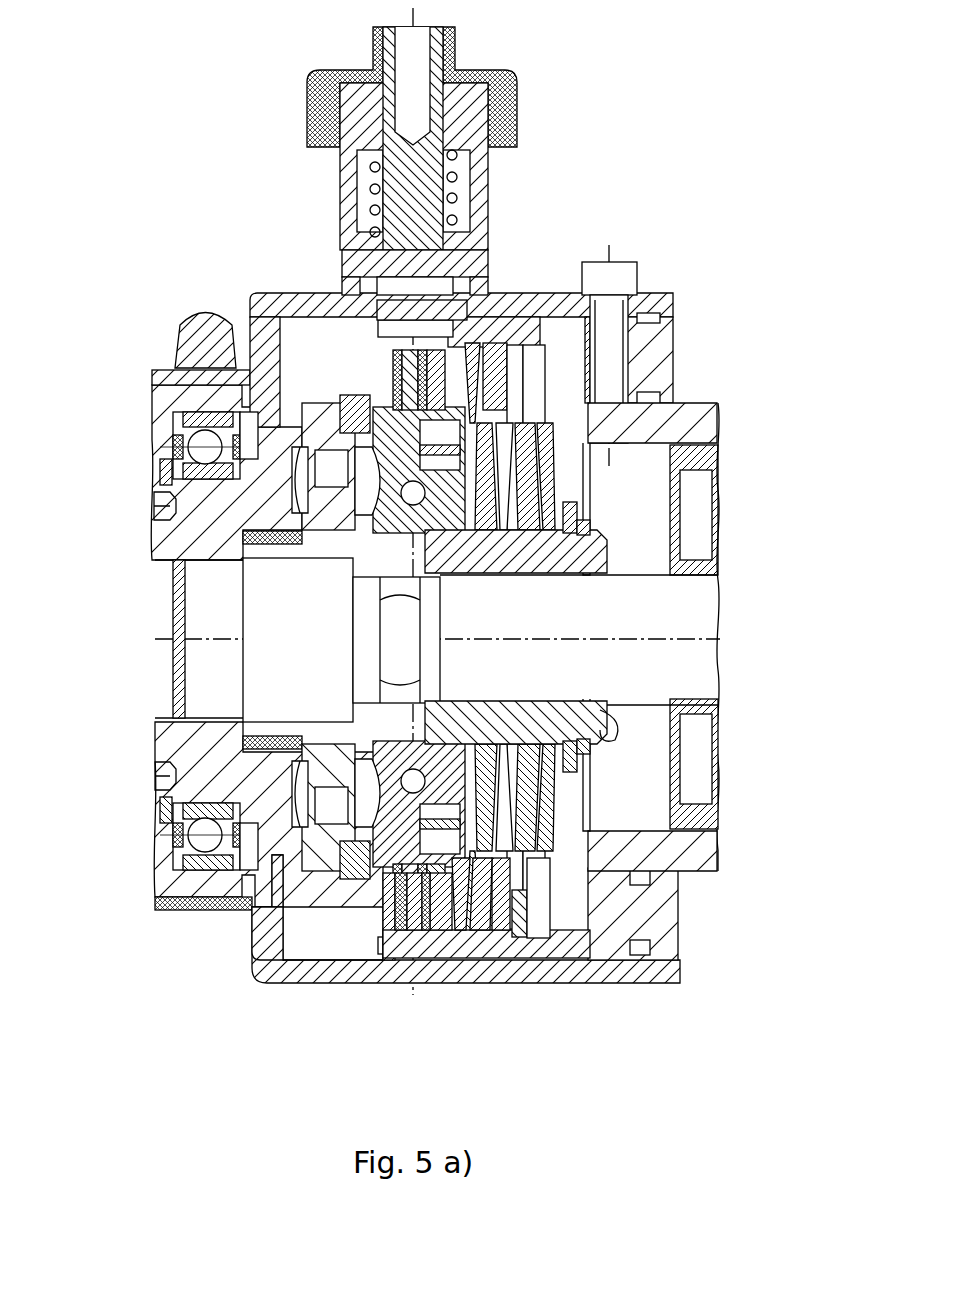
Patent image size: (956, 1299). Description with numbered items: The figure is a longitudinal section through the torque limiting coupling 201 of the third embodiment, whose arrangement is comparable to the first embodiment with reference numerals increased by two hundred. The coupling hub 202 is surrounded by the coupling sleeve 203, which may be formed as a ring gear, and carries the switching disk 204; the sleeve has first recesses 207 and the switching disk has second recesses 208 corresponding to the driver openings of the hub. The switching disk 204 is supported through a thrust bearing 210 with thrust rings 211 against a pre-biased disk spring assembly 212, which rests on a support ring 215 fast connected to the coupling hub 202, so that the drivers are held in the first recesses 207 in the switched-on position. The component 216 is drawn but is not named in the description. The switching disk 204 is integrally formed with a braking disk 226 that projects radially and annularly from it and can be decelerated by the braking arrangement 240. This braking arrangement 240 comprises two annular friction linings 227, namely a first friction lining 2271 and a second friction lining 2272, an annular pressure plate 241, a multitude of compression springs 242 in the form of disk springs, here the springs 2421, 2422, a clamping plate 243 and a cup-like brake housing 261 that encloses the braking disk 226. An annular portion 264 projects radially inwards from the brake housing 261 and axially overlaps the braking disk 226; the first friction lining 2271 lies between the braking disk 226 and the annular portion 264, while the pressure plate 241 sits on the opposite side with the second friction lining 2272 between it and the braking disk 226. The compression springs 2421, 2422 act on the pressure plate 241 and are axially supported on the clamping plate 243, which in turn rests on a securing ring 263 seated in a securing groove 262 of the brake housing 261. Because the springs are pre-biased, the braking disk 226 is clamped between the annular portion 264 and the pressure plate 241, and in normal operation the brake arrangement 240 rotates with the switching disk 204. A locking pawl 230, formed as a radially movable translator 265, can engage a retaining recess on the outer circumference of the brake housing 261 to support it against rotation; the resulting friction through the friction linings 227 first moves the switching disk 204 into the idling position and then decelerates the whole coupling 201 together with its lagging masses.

The torque limiting coupling 201 is at (258, 218).
The coupling hub 202 is at (303, 563).
The coupling sleeve 203 is at (170, 545).
The switching disk 204 is at (312, 545).
The first recesses 207 is at (305, 440).
The second recesses 208 is at (400, 545).
The thrust bearing 210 is at (446, 518).
The thrust ring 211 is at (478, 535).
The disk spring assembly 212 is at (507, 542).
The support ring 215 is at (568, 535).
The bearing 216 is at (167, 857).
The braking disk 226 is at (412, 932).
The friction linings 227 is at (396, 987).
The first friction lining 2271 is at (402, 935).
The second friction lining 2272 is at (428, 935).
The locking pawl 230 is at (430, 190).
The braking arrangement 240 is at (372, 944).
The pressure plate 241 is at (450, 932).
The compression springs 242 is at (500, 980).
The compression spring 2421 is at (468, 932).
The compression spring 2422 is at (487, 932).
The clamping plate 243 is at (500, 932).
The brake housing 261 is at (392, 932).
The securing groove 262 is at (520, 905).
The securing ring 263 is at (535, 905).
The annular portion 264 is at (385, 905).
The radially movable translator 265 is at (516, 128).